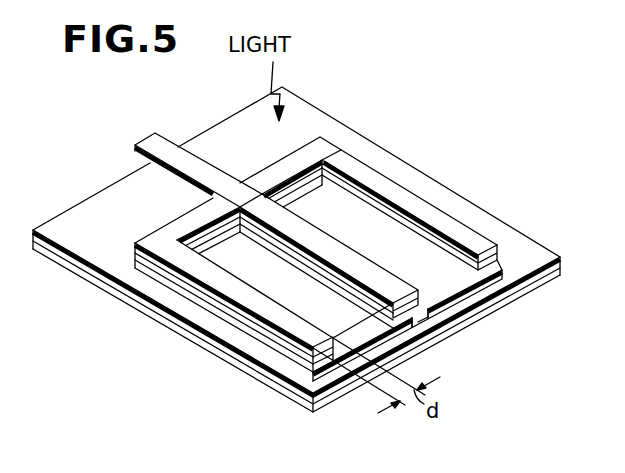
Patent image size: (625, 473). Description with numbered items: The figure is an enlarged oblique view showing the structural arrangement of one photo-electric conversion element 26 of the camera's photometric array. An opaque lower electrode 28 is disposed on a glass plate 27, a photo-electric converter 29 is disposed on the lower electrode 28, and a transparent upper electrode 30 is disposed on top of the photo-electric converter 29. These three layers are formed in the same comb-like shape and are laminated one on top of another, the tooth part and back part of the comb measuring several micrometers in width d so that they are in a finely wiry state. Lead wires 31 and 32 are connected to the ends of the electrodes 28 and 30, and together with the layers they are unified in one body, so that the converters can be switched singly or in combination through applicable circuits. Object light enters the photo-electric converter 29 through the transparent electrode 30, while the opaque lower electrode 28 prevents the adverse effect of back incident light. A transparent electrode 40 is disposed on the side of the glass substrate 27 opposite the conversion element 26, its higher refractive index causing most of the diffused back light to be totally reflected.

The photo-electric conversion element 26 is at (418, 186).
The glass plate 27 is at (318, 388).
The lower electrode 28 is at (198, 304).
The photo-electric converter 29 is at (163, 276).
The upper electrode 30 is at (247, 313).
The lead wire 31 is at (428, 318).
The lead wire 32 is at (164, 140).
The transparent electrode 40 is at (58, 260).